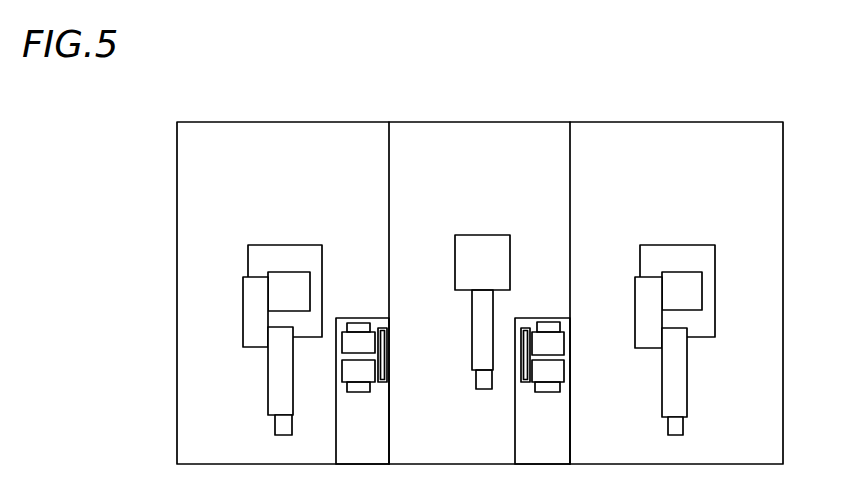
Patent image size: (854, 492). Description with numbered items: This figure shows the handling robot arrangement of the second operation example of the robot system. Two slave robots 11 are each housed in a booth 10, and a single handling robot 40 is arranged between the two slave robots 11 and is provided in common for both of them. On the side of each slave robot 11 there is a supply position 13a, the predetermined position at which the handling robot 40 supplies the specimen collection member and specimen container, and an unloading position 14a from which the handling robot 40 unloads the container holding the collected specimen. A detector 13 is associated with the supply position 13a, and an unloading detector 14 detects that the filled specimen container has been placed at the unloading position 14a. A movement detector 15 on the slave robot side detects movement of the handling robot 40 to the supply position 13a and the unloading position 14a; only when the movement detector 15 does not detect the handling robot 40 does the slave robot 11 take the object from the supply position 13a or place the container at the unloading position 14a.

The booth 10 is at (349, 122).
The slave robot 11 is at (306, 245).
The first connector 13 is at (456, 319).
The supply position 13a is at (353, 343).
The unloading detector 14 is at (456, 398).
The unloading position 14a is at (353, 368).
The movement detector 15 is at (388, 334).
The handling robot 40 is at (500, 236).